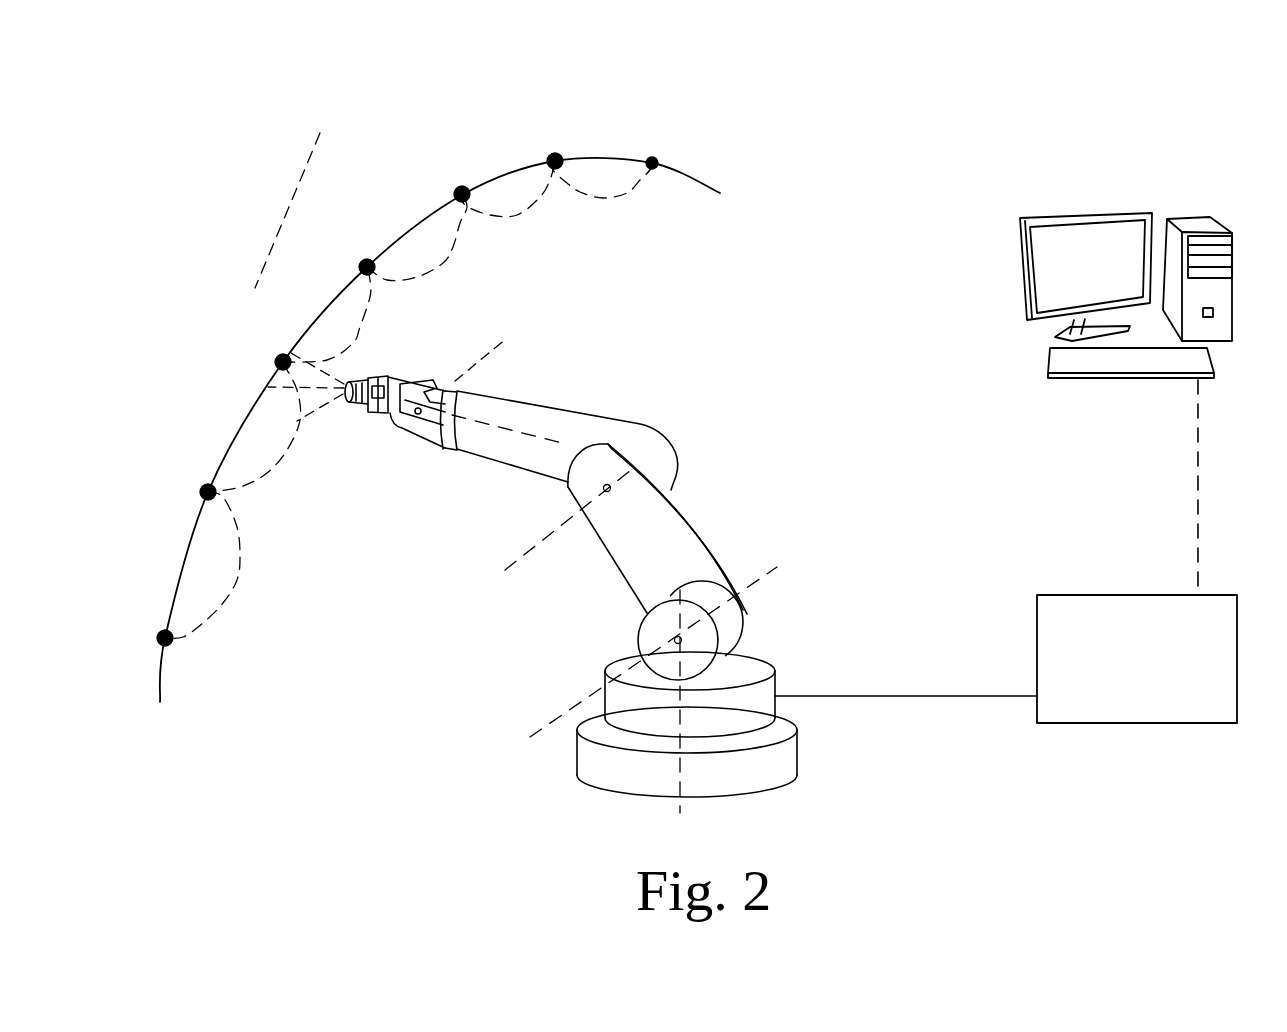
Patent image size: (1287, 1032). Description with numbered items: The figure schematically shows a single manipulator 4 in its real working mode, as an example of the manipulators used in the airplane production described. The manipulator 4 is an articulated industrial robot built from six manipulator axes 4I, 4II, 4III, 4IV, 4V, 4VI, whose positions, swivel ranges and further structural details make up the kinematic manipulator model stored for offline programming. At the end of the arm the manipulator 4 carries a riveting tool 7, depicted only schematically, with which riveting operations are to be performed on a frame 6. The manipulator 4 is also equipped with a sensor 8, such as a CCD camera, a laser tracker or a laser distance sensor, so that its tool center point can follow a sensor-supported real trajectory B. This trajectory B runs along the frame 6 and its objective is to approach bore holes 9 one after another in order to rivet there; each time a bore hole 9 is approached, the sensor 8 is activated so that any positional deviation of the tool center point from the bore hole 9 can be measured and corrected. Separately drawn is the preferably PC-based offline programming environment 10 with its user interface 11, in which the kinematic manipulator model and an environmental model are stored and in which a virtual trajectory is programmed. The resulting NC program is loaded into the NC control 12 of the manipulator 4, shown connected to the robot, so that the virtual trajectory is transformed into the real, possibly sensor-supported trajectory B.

The manipulator 4 is at (700, 412).
The manipulator axis 4I is at (682, 757).
The manipulator axis 4II is at (753, 585).
The manipulator axis 4III is at (580, 576).
The manipulator axis 4IV is at (507, 427).
The manipulator axis 4V is at (400, 430).
The manipulator axis 4VI is at (408, 372).
The frame 6 is at (695, 180).
The riveting tool 7 is at (384, 366).
The sensor 8 is at (380, 410).
The bore hole 9 is at (520, 145).
The offline programming environment 10 is at (1192, 203).
The user interface 11 is at (1058, 363).
The NC control 12 is at (1125, 690).
The real trajectory B is at (357, 327).